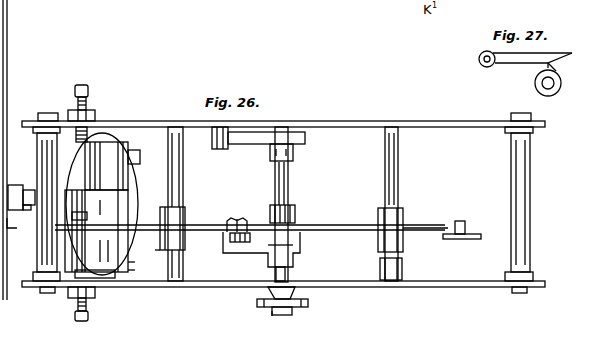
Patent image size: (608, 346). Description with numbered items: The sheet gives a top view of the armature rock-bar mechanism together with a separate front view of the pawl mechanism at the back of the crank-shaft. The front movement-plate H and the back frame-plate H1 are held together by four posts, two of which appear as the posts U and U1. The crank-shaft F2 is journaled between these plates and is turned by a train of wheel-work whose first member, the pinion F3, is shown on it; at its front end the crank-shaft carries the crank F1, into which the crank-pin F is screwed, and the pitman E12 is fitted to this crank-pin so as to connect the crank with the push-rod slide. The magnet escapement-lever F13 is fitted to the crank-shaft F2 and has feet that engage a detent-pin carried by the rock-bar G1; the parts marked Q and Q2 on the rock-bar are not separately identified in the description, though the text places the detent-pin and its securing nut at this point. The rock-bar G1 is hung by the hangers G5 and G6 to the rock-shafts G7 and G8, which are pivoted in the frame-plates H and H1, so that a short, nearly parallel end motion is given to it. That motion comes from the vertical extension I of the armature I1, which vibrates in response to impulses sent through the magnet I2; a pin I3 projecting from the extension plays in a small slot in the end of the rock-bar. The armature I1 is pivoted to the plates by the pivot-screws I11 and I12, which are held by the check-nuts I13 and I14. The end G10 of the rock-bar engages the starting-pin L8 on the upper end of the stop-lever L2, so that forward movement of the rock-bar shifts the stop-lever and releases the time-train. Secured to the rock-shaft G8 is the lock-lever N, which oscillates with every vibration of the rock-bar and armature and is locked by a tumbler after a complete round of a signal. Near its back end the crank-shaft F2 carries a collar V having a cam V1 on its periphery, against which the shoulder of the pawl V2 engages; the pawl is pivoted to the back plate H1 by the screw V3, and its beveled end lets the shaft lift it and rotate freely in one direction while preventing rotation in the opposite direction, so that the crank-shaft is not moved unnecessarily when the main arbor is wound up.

In FIG. 26, the front movement-plate H is at (7, 42).
In FIG. 26, the back frame-plate H1 is at (340, 121).
In FIG. 26, the post U is at (40, 255).
In FIG. 26, the post U1 is at (528, 260).
In FIG. 26, the vertical extension of the armature I is at (70, 192).
In FIG. 26, the armature I1 is at (107, 147).
In FIG. 26, the magnet I2 is at (138, 172).
In FIG. 26, the pin I3 is at (72, 230).
In FIG. 26, the pivot-screw I11 is at (31, 215).
In FIG. 26, the pivot-screw I12 is at (88, 90).
In FIG. 26, the check-nut I13 is at (15, 185).
In FIG. 26, the check-nut I14 is at (95, 115).
In FIG. 26, the rock-bar G1 is at (200, 232).
In FIG. 26, the hanger G5 is at (158, 259).
In FIG. 26, the hanger G6 is at (378, 215).
In FIG. 26, the rock-shaft G7 is at (183, 188).
In FIG. 26, the rock-shaft G8 is at (395, 175).
In FIG. 26, the end of the rock-bar G10 is at (445, 228).
In FIG. 26, the nut Q is at (232, 218).
In FIG. 26, the pin Q2 is at (242, 218).
In FIG. 26, the crank-pin F is at (288, 311).
In FIG. 26, the crank F1 is at (308, 303).
In FIG. 26, the crank-shaft F2 is at (285, 273).
In FIG. 26, the pinion F3 is at (295, 213).
In FIG. 26, the magnet escapement-lever F13 is at (293, 248).
In FIG. 26, the pitman E12 is at (270, 311).
In FIG. 26, the lock-lever N is at (402, 268).
In FIG. 26, the starting-pin L8 is at (465, 225).
In FIG. 26, the stop-lever L2 is at (475, 239).
In FIG. 26, the collar V is at (293, 156).
In FIG. 27, the collar V is at (561, 83).
In FIG. 27, the cam V1 is at (540, 66).
In FIG. 26, the pawl V2 is at (250, 144).
In FIG. 27, the pawl V2 is at (500, 64).
In FIG. 26, the screw V3 is at (220, 149).
In FIG. 27, the screw V3 is at (479, 62).